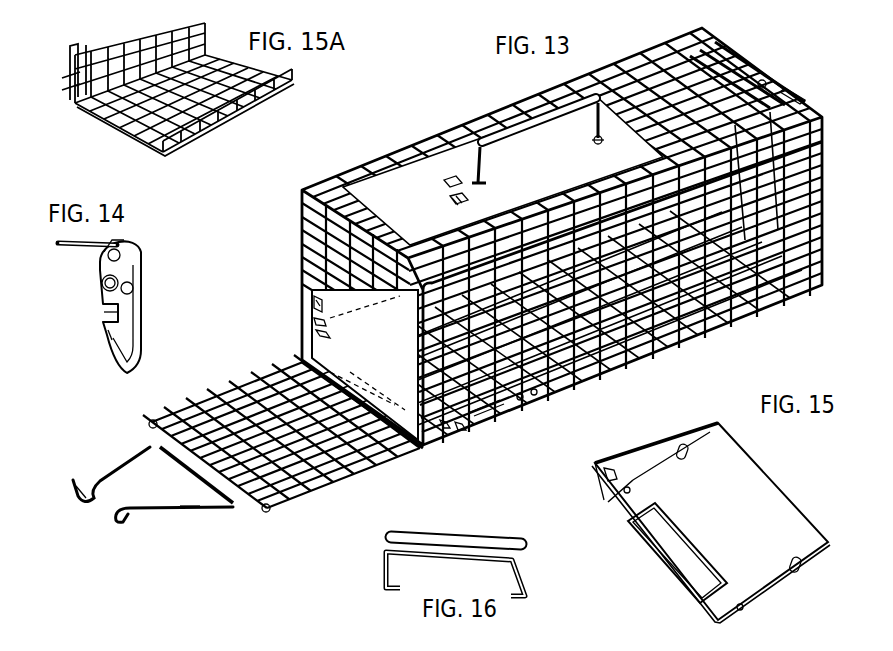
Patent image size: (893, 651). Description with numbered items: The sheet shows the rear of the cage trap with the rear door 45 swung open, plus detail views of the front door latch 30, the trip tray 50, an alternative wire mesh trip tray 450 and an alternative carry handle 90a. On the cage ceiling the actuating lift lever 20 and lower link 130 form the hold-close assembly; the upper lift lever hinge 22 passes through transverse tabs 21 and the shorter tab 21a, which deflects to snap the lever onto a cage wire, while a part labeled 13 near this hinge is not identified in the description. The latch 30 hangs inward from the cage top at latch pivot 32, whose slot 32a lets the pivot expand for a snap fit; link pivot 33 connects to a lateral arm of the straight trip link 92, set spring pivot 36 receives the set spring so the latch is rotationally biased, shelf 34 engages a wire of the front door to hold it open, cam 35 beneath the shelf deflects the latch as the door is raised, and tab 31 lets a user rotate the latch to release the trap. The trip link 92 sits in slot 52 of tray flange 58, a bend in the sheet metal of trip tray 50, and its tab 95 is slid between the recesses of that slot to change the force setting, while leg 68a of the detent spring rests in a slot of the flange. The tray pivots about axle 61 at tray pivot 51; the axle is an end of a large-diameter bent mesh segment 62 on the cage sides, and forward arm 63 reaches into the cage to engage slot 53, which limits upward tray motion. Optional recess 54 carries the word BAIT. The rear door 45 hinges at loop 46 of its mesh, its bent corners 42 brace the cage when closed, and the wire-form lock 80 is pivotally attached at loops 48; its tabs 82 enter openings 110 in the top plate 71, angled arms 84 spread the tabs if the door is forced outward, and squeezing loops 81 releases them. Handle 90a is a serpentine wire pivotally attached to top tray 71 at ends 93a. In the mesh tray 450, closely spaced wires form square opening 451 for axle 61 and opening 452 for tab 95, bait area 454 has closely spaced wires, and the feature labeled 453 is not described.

In FIG. 13, the latch rod 13 is at (765, 90).
In FIG. 13, the actuating lift lever 20 is at (550, 236).
In FIG. 13, the transverse tabs 21 is at (745, 63).
In FIG. 13, the transverse tab 21a is at (762, 80).
In FIG. 13, the upper lift lever hinge 22 is at (800, 96).
In FIG. 13, the lower link 130 is at (752, 215).
In FIG. 13, the top plate 71 is at (461, 165).
In FIG. 13, the handle 90a is at (537, 136).
In FIG. 16, the handle 90a is at (378, 538).
In FIG. 13, the ends 93a is at (597, 145).
In FIG. 13, the openings 110 is at (456, 200).
In FIG. 13, the trip link 92 is at (325, 283).
In FIG. 13, the leg 68a is at (314, 302).
In FIG. 13, the tab 95 is at (314, 320).
In FIG. 13, the axle 61 is at (314, 333).
In FIG. 13, the trip tray 50 is at (401, 378).
In FIG. 15, the trip tray 50 is at (715, 464).
In FIG. 13, the loop 46 is at (301, 362).
In FIG. 13, the rear door 45 is at (228, 390).
In FIG. 13, the bent corners 42 is at (150, 422).
In FIG. 13, the loops 48 is at (213, 491).
In FIG. 13, the tabs 82 is at (79, 478).
In FIG. 13, the loops 81 is at (90, 503).
In FIG. 13, the angled arms 84 is at (165, 509).
In FIG. 13, the lock 80 is at (150, 518).
In FIG. 13, the bent segment 62 is at (492, 420).
In FIG. 13, the slot 53 is at (522, 398).
In FIG. 15, the slot 53 is at (685, 446).
In FIG. 13, the forward arm 63 is at (562, 407).
In FIG. 14, the latch 30 is at (155, 312).
In FIG. 14, the tab 31 is at (60, 248).
In FIG. 14, the latch pivot 32 is at (126, 247).
In FIG. 14, the slot 32a is at (121, 254).
In FIG. 14, the link pivot 33 is at (134, 288).
In FIG. 14, the shelf 34 is at (103, 320).
In FIG. 14, the cam 35 is at (110, 336).
In FIG. 14, the set spring pivot 36 is at (104, 286).
In FIG. 15A, the wire mesh trip tray 450 is at (262, 122).
In FIG. 15A, the square shaped opening 451 is at (66, 86).
In FIG. 15A, the opening 452 is at (68, 54).
In FIG. 15A, the back wall 453 is at (165, 38).
In FIG. 15A, the bait area 454 is at (100, 120).
In FIG. 15, the tray pivot 51 is at (625, 494).
In FIG. 15, the slot 52 is at (604, 474).
In FIG. 15, the recess 54 is at (700, 576).
In FIG. 15, the tray flange 58 is at (648, 462).